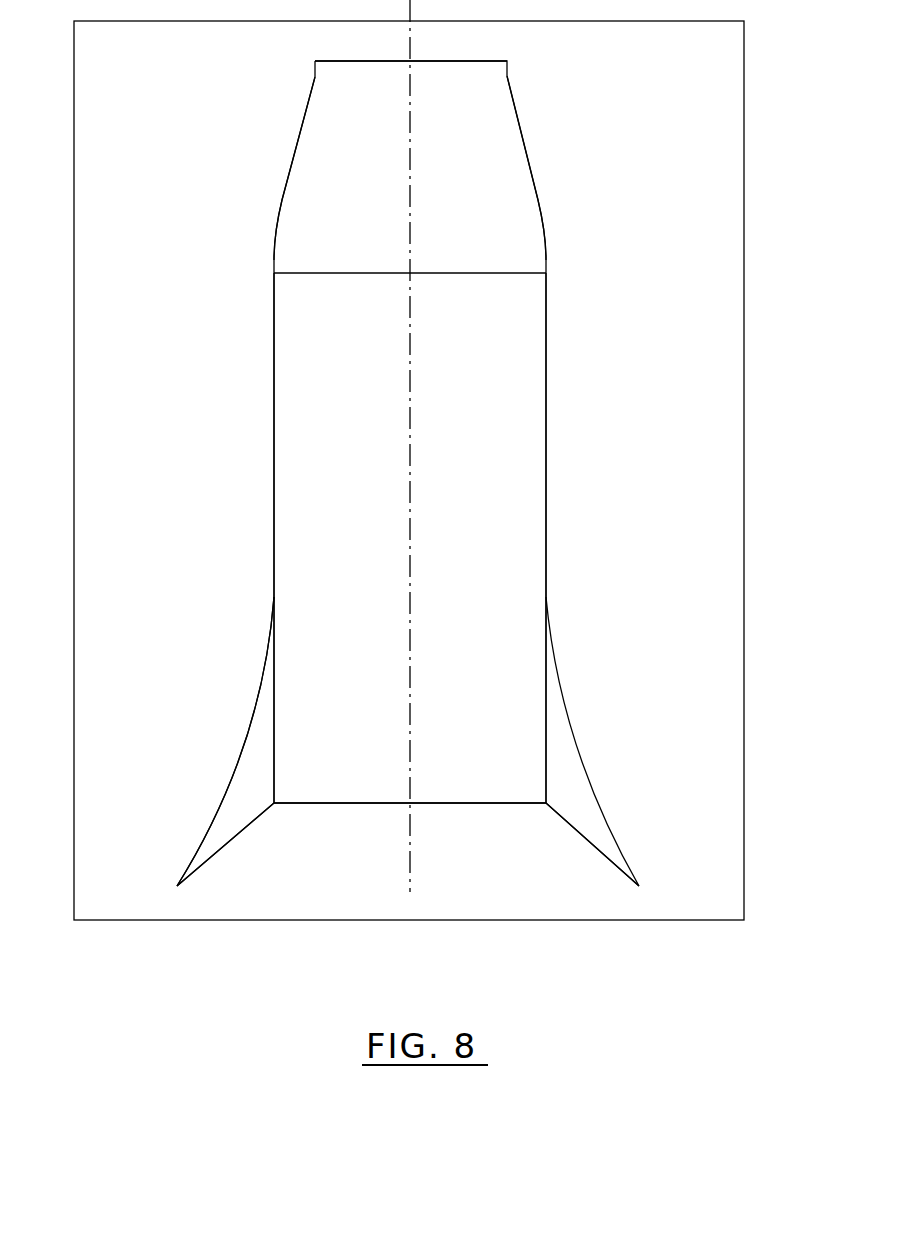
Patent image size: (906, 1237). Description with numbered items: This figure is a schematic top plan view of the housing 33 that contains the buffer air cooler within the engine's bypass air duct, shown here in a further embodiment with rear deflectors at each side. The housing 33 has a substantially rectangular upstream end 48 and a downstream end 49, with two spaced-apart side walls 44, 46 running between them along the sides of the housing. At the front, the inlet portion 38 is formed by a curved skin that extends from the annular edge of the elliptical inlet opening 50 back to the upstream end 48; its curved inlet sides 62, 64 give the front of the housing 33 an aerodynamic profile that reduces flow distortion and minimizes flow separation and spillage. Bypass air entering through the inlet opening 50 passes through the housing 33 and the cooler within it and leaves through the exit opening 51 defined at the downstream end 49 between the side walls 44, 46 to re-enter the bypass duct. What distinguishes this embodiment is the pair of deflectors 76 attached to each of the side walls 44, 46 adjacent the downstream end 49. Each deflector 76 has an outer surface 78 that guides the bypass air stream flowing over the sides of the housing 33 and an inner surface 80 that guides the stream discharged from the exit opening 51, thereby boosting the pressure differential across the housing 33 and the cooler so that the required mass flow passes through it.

The housing 33 is at (547, 435).
The inlet portion 38 is at (482, 143).
The side wall 44 is at (273, 524).
The side wall 46 is at (547, 522).
The upstream end 48 is at (465, 273).
The downstream end 49 is at (538, 805).
The inlet opening 50 is at (448, 68).
The exit opening 51 is at (458, 805).
The inlet side 62 is at (281, 197).
The inlet side 64 is at (540, 208).
The deflector 76 is at (253, 770).
The outer surface 78 is at (218, 813).
The inner surface 80 is at (254, 822).